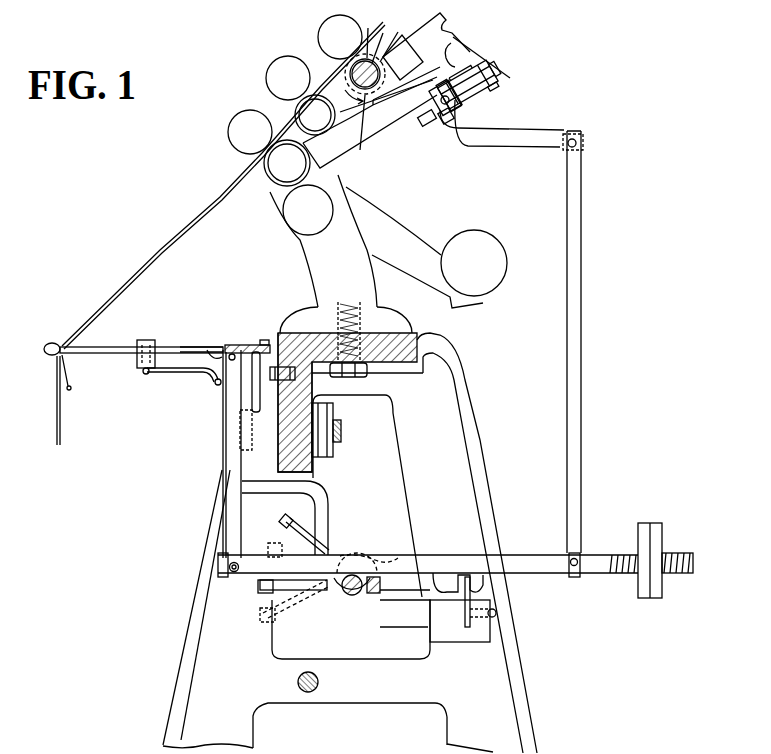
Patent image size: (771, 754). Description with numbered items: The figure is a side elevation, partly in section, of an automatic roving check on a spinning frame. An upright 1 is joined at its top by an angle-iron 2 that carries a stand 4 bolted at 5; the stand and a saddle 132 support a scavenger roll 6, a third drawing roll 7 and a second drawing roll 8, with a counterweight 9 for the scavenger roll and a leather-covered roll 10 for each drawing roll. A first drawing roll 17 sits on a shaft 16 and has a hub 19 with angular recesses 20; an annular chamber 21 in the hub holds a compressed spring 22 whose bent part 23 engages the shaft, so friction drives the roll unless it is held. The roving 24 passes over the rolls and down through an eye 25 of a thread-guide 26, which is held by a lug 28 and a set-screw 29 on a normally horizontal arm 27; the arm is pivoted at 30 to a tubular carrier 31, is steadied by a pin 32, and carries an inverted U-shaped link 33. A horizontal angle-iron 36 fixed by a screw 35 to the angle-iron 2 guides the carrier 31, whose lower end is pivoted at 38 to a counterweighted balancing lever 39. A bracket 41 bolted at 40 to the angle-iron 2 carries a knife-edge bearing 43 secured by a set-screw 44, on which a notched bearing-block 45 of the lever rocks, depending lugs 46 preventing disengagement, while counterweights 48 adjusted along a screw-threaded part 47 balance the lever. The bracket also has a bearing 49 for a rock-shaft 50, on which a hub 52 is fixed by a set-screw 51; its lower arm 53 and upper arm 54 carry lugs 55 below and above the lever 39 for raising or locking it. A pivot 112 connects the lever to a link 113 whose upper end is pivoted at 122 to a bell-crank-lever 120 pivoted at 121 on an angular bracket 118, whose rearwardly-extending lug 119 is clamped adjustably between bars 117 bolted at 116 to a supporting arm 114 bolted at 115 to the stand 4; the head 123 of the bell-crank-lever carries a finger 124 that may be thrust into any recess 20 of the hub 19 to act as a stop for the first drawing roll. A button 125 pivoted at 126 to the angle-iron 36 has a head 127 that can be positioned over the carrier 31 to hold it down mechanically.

The upright 1 is at (441, 466).
The angle-iron 2 is at (410, 347).
The stand 4 is at (376, 268).
The bolt 5 is at (352, 378).
The scavenger roll 6 is at (308, 210).
The third drawing roll 7 is at (277, 170).
The second drawing roll 8 is at (315, 115).
The counterweight 9 is at (474, 263).
The leather-covered roll 10 is at (318, 37).
The shaft 16 is at (352, 72).
The first drawing roll 17 is at (398, 36).
The hub 19 is at (385, 37).
The angular recesses 20 is at (443, 24).
The annular chamber 21 is at (410, 40).
The spring 22 is at (364, 133).
The bent part of spring 23 is at (366, 32).
The roving 24 is at (223, 185).
The eye 25 is at (44, 350).
The thread-guide 26 is at (117, 347).
The arm 27 is at (182, 370).
The lug 28 is at (150, 340).
The set-screw 29 is at (145, 374).
The pivot 30 is at (208, 349).
The carrier 31 is at (228, 470).
The pin 32 is at (215, 385).
The inverted U-shaped link 33 is at (250, 400).
The screw 35 is at (312, 393).
The horizontal angle-iron 36 is at (277, 337).
The pivot 38 is at (232, 576).
The balancing lever 39 is at (522, 563).
The bolt 40 is at (341, 438).
The bracket 41 is at (330, 497).
The knife-edge bearing 43 is at (486, 634).
The set-screw 44 is at (497, 612).
The bearing-block 45 is at (467, 577).
The depending lugs 46 is at (440, 573).
The screw-threaded part 47 is at (693, 555).
The counterweights 48 is at (648, 523).
The bearing 49 is at (380, 566).
The rock-shaft 50 is at (350, 596).
The set-screw 51 is at (381, 590).
The hub 52 is at (364, 600).
The lower arm 53 is at (300, 592).
The upper arm 54 is at (312, 540).
The lug 55 is at (283, 522).
The pivot 112 is at (578, 572).
The link 113 is at (581, 365).
The supporting arm 114 is at (430, 125).
The bolt 115 is at (447, 122).
The bolt 116 is at (495, 100).
The bars 117 is at (480, 70).
The angular bracket 118 is at (459, 80).
The rearwardly-extending lug 119 is at (480, 66).
The bell-crank-lever 120 is at (500, 137).
The pivot 121 is at (460, 112).
The pivot 122 is at (579, 144).
The head 123 is at (440, 68).
The finger 124 is at (402, 108).
The button 125 is at (250, 345).
The pivot 126 is at (264, 340).
The head 127 is at (231, 343).
The saddle 132 is at (454, 38).